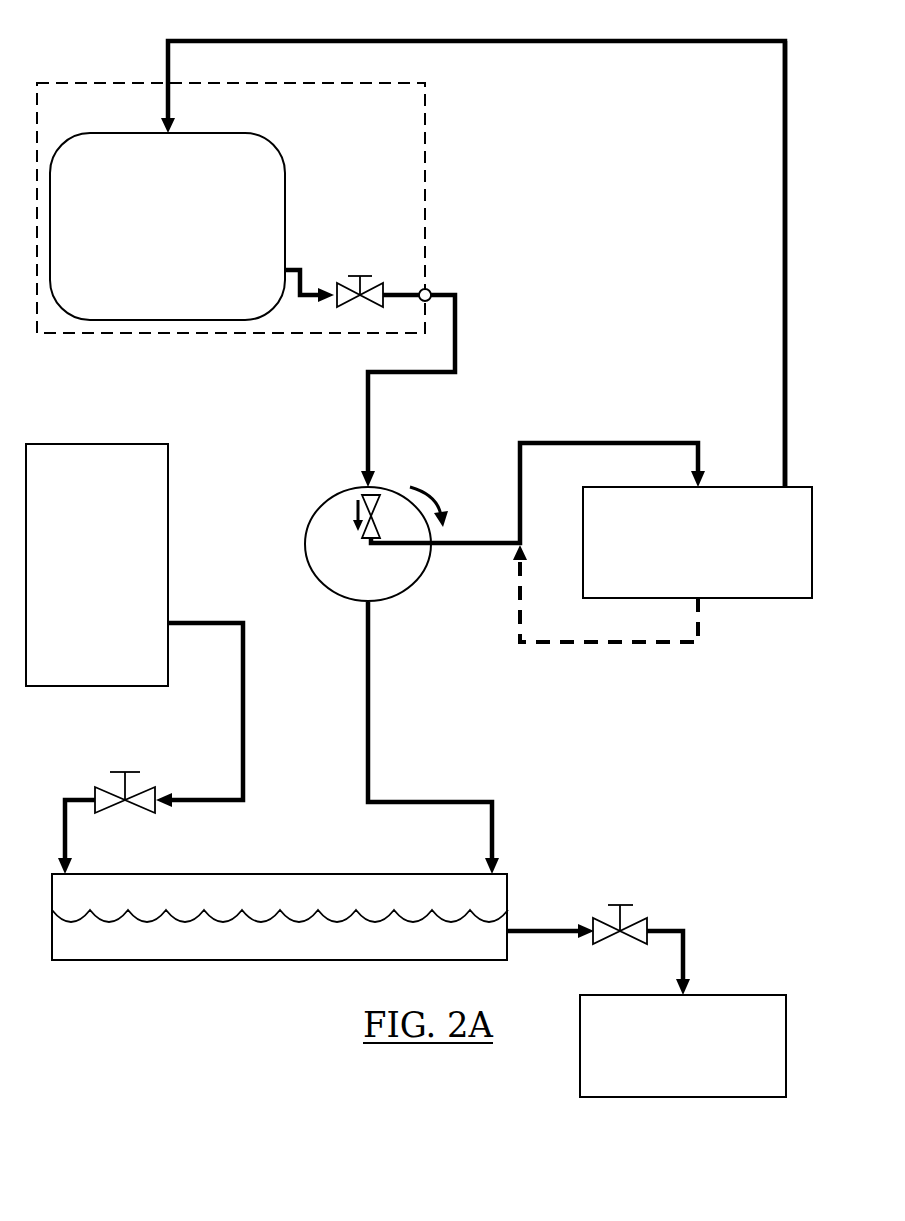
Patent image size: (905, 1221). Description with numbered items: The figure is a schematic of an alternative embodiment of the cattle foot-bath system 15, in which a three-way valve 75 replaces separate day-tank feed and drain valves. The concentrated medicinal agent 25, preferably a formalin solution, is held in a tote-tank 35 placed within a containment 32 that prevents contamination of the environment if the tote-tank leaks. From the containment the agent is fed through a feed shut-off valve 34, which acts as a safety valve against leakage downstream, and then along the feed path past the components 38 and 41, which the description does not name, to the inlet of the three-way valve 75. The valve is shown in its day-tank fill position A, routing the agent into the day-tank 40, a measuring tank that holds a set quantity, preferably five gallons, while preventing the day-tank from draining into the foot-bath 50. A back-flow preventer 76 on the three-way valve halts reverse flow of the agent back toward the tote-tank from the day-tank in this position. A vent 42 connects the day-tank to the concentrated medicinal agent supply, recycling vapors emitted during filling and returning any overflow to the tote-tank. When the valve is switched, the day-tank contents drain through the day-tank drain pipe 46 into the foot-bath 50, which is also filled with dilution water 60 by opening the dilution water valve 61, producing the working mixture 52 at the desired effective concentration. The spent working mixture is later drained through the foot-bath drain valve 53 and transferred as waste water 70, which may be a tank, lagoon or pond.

The cattle foot-bath system 15 is at (104, 50).
The concentrated medicinal agent 25 is at (182, 266).
The containment 32 is at (320, 154).
The feed shut-off valve 34 is at (383, 287).
The tote-tank 35 is at (288, 242).
The connector 38 is at (429, 289).
The day-tank 40 is at (710, 566).
The supply line 41 is at (458, 343).
The vent 42 is at (783, 285).
The day-tank drain pipe 46 is at (370, 713).
The foot-bath 50 is at (350, 901).
The working mixture 52 is at (175, 950).
The foot-bath drain valve 53 is at (641, 918).
The dilution water 60 is at (109, 601).
The dilution water valve 61 is at (150, 793).
The waste water 70 is at (695, 1072).
The three-way valve 75 is at (306, 540).
The back-flow preventer 76 is at (388, 488).